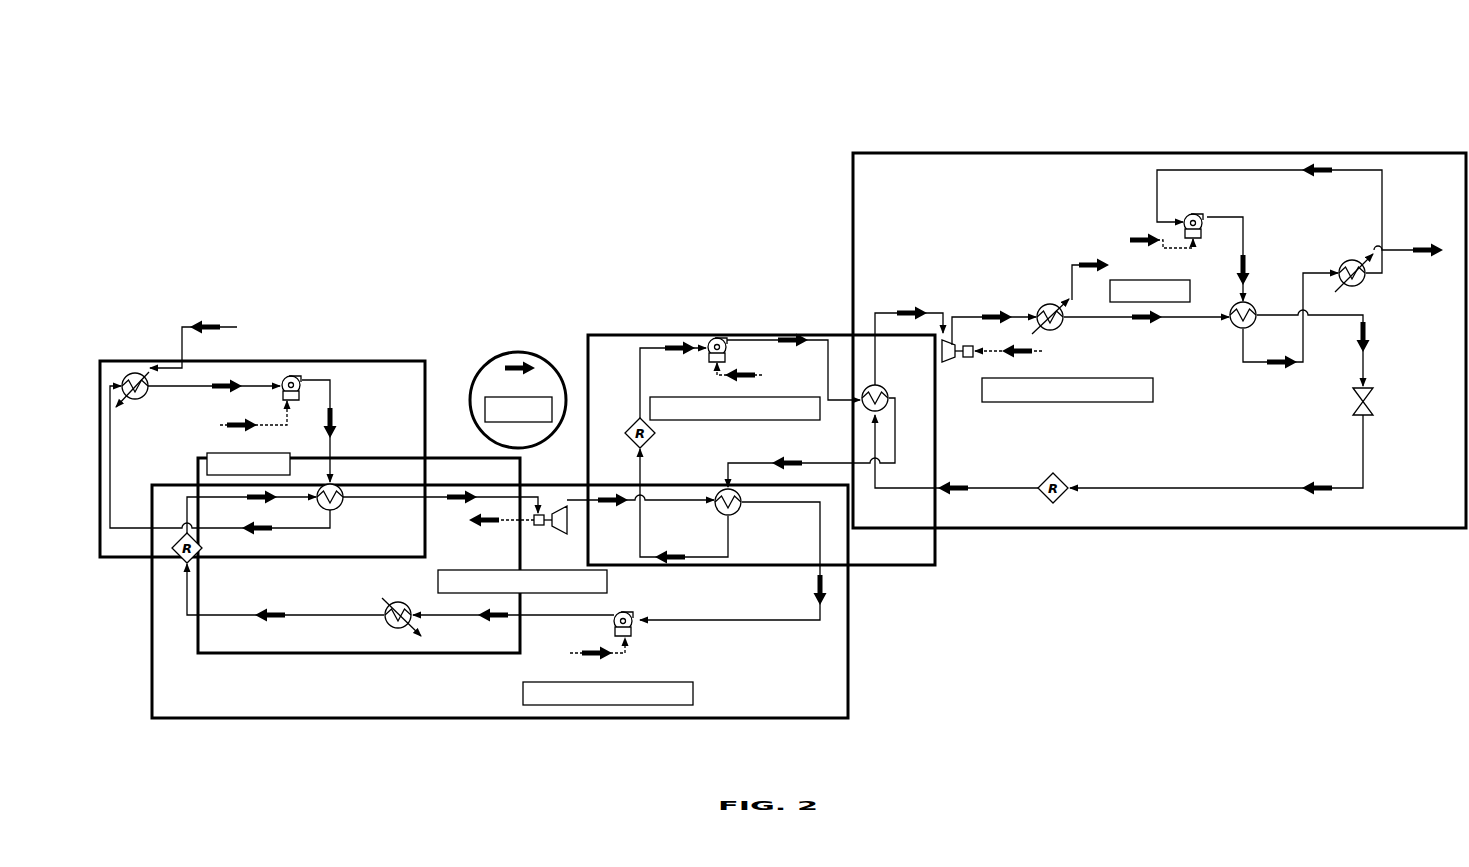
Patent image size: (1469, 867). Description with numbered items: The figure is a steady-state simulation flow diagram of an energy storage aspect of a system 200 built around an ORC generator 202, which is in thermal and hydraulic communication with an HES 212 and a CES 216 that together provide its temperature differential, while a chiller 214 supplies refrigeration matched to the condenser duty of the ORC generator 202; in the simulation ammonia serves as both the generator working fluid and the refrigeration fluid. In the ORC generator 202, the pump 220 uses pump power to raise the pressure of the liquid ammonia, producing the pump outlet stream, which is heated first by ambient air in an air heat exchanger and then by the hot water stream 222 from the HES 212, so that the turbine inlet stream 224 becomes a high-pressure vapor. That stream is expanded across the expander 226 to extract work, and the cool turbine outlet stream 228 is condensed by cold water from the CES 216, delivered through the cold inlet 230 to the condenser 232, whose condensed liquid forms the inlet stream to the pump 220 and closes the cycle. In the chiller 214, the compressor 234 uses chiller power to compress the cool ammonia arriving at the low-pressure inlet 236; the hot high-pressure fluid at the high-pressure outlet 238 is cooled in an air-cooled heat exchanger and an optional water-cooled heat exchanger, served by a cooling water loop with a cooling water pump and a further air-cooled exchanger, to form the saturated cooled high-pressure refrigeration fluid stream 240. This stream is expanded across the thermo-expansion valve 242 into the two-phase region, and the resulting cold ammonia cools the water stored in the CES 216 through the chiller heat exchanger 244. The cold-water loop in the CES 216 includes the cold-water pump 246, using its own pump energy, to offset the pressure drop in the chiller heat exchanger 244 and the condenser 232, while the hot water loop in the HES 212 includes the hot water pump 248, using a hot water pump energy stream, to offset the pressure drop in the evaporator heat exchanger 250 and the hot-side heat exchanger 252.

The system 200 is at (1278, 113).
The ORC generator 202 is at (852, 605).
The HES 212 is at (272, 361).
The chiller 214 is at (1193, 529).
The CES 216 is at (809, 335).
The pump P-100 220 is at (633, 614).
The hot water stream Hot_in 222 is at (352, 446).
The turbine inlet T_in stream 224 is at (412, 493).
The expander K-100 226 is at (560, 497).
The turbine outlet T_out stream 228 is at (681, 500).
The Cold_in inlet 230 is at (829, 466).
The condenser 232 is at (799, 556).
The compressor K-101 234 is at (971, 406).
The low-pressure LP_in inlet 236 is at (898, 312).
The HP_out outlet 238 is at (987, 312).
The refrigeration fluid stream Cool_HP 240 is at (1388, 350).
The thermo-expansion valve VLV-100 242 is at (1375, 402).
The heat exchanger E-102 244 is at (890, 387).
The pump P-101 246 is at (716, 335).
The pump HW_Pump 248 is at (302, 377).
The heat exchanger Evaporator 250 is at (396, 545).
The heat exchanger E-104 252 is at (136, 372).